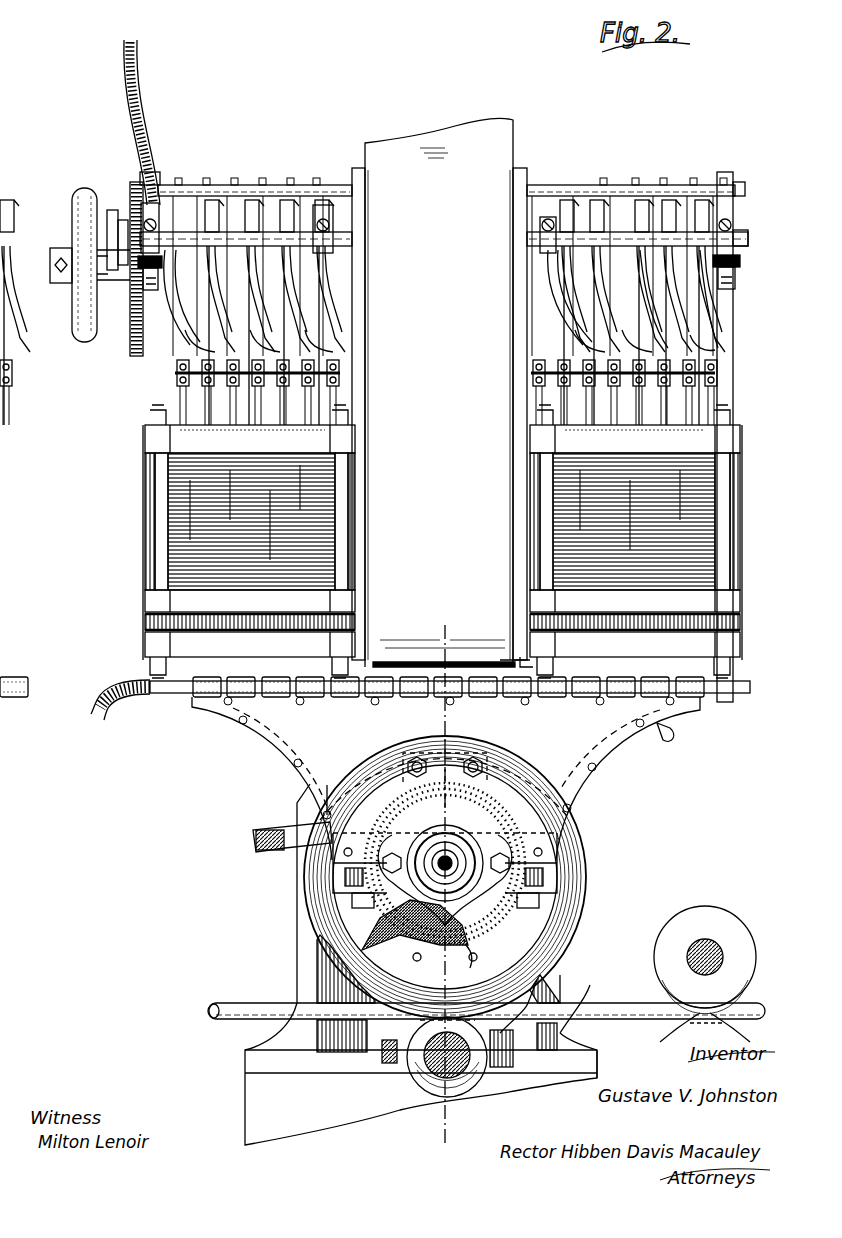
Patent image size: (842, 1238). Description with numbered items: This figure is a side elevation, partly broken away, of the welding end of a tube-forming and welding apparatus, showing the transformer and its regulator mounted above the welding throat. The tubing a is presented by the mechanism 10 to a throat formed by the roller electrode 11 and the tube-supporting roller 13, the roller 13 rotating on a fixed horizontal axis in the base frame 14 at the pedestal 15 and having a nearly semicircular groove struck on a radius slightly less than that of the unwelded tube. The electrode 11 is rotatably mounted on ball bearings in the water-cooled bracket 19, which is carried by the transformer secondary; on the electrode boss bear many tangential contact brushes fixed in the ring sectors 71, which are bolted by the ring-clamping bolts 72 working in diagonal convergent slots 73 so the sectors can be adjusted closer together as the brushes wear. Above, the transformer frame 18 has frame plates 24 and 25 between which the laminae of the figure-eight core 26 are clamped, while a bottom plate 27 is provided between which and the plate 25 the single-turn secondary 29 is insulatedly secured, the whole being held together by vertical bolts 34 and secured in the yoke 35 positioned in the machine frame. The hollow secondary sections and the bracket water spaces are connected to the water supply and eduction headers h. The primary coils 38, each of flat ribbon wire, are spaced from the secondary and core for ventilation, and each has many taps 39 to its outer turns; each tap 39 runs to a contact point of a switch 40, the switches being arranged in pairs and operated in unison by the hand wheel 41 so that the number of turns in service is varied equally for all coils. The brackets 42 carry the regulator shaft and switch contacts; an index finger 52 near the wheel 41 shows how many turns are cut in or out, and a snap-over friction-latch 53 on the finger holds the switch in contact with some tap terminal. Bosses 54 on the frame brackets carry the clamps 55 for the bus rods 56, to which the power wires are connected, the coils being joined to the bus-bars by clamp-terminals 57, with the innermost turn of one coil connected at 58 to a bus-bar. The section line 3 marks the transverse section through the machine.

The section line 3- 3 is at (434, 637).
The tube-presenting mechanism 10 is at (737, 920).
The roller electrode 11 is at (578, 917).
The tube-supporting roller 13 is at (415, 1077).
The base frame 14 is at (247, 1117).
The pedestal 15 is at (297, 963).
The magnet frame 18 is at (758, 412).
The electrode-carrying bracket 19 is at (305, 785).
The frame plate 24 is at (146, 440).
The frame plate 25 is at (146, 601).
The core 26 is at (152, 497).
The bottom plate 27 is at (160, 650).
The single-turn secondary 29 is at (205, 612).
The vertical bolt 34 is at (160, 522).
The yoke 35 is at (510, 118).
The primary coil 38 is at (160, 432).
The tap 39 is at (195, 362).
The switch 40 is at (262, 205).
The hand wheel 41 is at (72, 322).
The bracket 42 is at (160, 348).
The index finger 52 is at (128, 205).
The snap-over friction-latch 53 is at (122, 215).
The boss 54 is at (142, 275).
The clamp 55 is at (152, 215).
The bus rod 56 is at (749, 237).
The clamp-terminal 57 is at (160, 328).
The connection 58 is at (325, 218).
The ring sector 71 is at (545, 978).
The ring-clamping bolt 72 is at (412, 772).
The convergent slot 73 is at (476, 960).
The tubing a is at (223, 1019).
The water header h is at (178, 697).